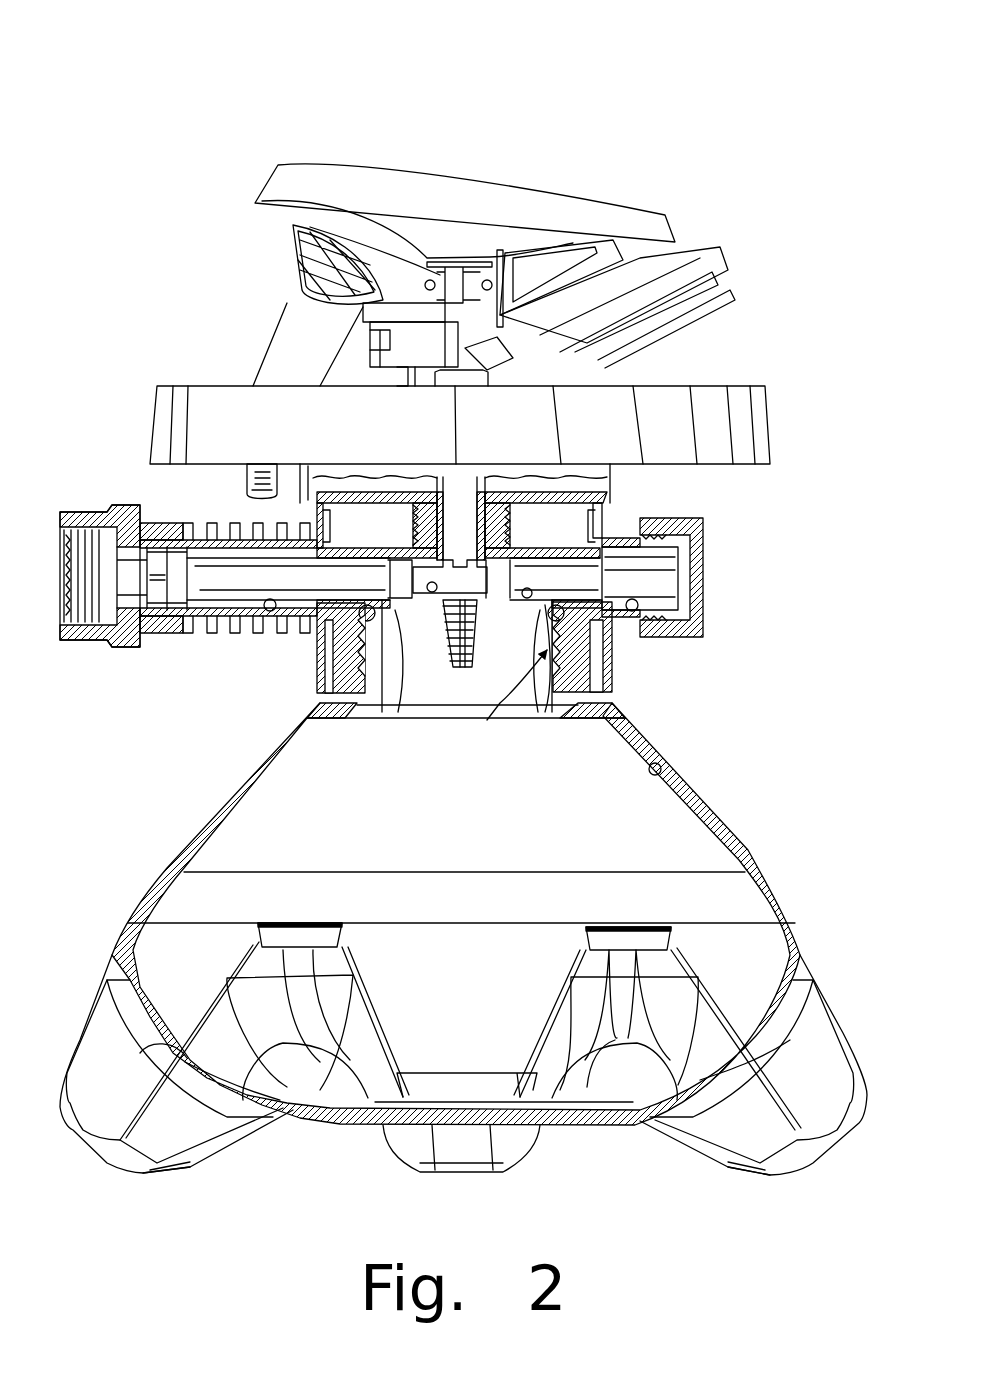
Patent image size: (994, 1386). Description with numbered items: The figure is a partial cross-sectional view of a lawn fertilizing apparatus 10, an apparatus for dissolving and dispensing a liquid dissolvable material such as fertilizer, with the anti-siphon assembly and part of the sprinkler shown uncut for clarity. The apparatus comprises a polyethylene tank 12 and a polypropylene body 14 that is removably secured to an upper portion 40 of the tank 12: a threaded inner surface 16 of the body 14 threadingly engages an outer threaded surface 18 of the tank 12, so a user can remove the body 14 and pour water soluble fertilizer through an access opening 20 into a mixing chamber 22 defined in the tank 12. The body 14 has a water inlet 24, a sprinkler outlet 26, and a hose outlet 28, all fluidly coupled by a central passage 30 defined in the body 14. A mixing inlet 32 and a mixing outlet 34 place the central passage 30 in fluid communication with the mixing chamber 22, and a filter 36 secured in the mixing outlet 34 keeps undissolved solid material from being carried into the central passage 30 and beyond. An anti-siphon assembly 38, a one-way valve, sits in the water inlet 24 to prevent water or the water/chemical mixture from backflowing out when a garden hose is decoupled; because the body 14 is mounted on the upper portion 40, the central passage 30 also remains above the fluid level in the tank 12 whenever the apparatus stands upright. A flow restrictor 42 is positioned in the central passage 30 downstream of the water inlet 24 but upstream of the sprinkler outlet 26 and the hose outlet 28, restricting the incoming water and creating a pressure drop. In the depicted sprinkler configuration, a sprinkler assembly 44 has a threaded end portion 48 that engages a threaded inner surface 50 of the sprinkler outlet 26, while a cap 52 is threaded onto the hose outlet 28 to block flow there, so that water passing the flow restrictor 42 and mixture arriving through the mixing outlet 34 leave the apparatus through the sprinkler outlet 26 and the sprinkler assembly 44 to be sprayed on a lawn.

The lawn fertilizing apparatus 10 is at (670, 95).
The tank 12 is at (709, 815).
The body 14 is at (608, 688).
The threaded inner surface 16 is at (317, 683).
The outer threaded surface 18 is at (548, 700).
The access opening 20 is at (553, 702).
The mixing chamber 22 is at (661, 764).
The water inlet 24 is at (270, 628).
The sprinkler outlet 26 is at (503, 515).
The hose outlet 28 is at (640, 617).
The central passage 30 is at (527, 590).
The mixing inlet 32 is at (409, 688).
The mixing outlet 34 is at (427, 585).
The filter 36 is at (470, 660).
The anti-siphon assembly 38 is at (180, 570).
The upper portion 40 is at (487, 720).
The flow restrictor 42 is at (392, 582).
The sprinkler assembly 44 is at (505, 170).
The threaded end portion 48 is at (462, 527).
The threaded inner surface 50 is at (380, 500).
The cap 52 is at (700, 570).